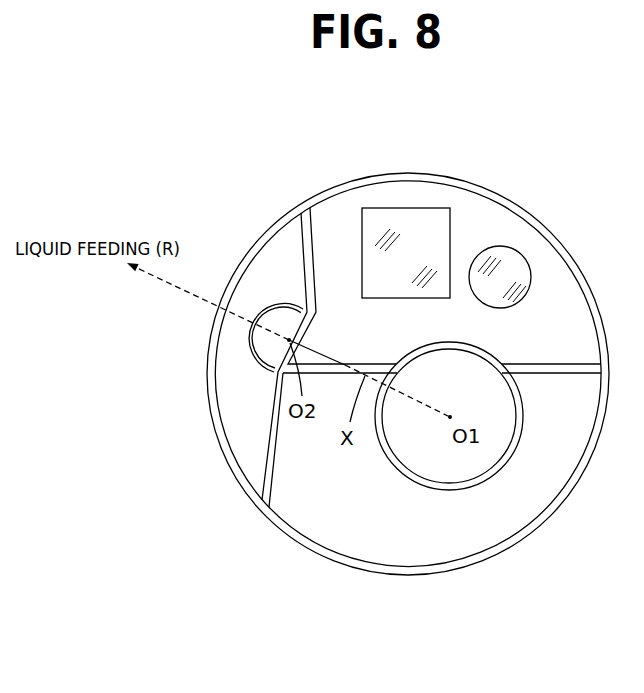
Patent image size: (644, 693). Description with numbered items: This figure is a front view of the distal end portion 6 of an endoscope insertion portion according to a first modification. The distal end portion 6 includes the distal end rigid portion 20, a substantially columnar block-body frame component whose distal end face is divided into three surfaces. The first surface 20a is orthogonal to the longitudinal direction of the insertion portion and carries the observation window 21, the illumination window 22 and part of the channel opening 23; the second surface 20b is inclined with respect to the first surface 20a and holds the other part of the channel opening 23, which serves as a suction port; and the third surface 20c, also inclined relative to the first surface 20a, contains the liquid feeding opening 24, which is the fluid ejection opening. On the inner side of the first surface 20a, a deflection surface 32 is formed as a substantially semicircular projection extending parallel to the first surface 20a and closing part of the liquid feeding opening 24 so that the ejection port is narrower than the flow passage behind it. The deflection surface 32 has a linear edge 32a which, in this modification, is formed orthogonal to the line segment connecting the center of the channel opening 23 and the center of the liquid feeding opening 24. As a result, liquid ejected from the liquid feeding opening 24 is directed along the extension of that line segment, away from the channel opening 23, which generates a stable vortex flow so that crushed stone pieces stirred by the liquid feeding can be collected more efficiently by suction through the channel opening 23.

The distal end portion 6 is at (381, 156).
The distal end rigid portion 20 is at (505, 195).
The first surface 20a is at (328, 220).
The second surface 20b is at (337, 523).
The third surface 20c is at (233, 352).
The observation window 21 is at (408, 222).
The illumination window 22 is at (515, 267).
The channel opening 23 is at (443, 458).
The liquid feeding opening 24 is at (275, 353).
The deflection surface 32 is at (315, 362).
The linear edge 32a is at (285, 302).